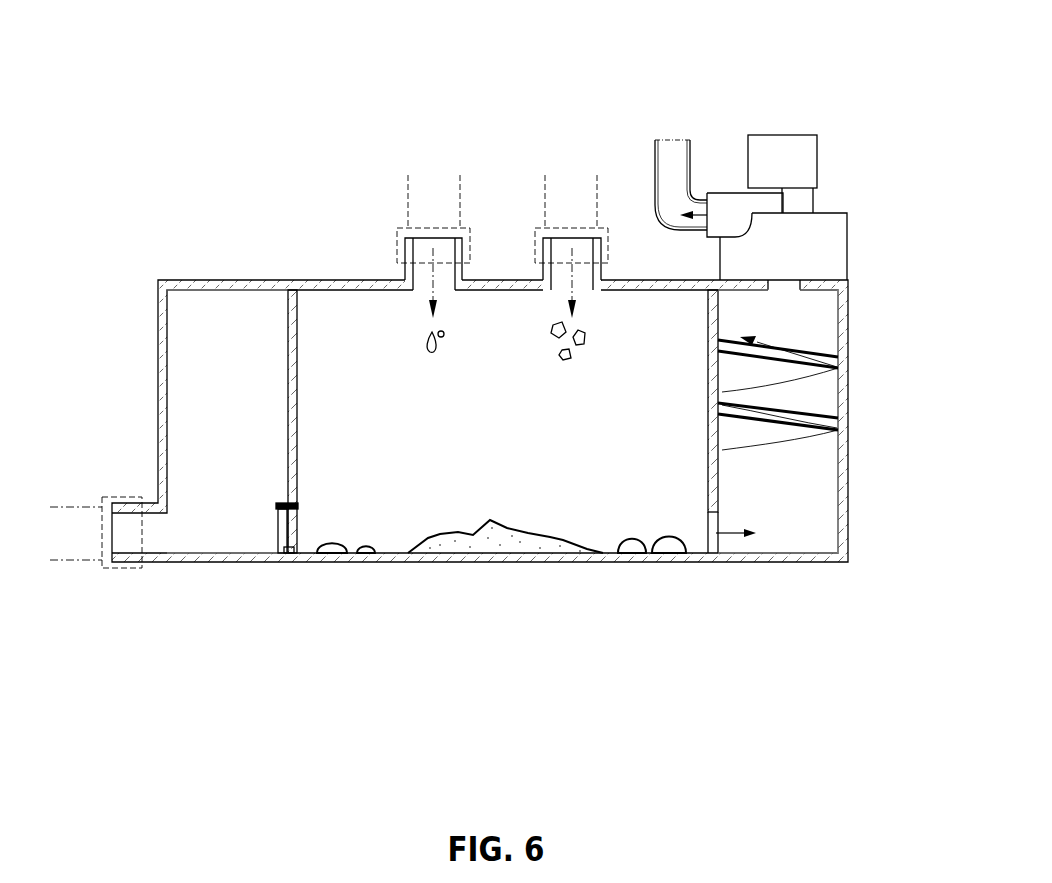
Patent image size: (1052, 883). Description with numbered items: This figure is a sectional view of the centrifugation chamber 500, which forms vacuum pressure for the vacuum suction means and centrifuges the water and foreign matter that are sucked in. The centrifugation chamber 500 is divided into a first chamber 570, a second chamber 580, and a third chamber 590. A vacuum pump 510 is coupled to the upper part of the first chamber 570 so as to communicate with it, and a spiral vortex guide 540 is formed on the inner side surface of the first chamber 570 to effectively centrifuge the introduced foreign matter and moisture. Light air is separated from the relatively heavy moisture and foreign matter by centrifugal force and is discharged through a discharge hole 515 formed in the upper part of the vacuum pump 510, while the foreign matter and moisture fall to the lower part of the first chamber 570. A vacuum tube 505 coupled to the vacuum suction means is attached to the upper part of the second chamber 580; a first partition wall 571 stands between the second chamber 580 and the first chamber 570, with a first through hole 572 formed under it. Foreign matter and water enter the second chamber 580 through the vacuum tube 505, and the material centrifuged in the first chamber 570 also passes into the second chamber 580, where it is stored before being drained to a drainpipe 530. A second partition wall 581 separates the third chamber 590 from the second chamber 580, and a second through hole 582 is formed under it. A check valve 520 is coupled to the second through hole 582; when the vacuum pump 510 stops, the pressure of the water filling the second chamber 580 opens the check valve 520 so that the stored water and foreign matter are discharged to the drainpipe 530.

The centrifugation chamber 500 is at (316, 213).
The vacuum tube 505 is at (543, 200).
The vacuum pump 510 is at (822, 242).
The discharge hole 515 is at (785, 293).
The check valve 520 is at (276, 523).
The drainpipe 530 is at (150, 545).
The spiral vortex guide 540 is at (815, 358).
The first chamber 570 is at (787, 535).
The first partition wall 571 is at (722, 486).
The first through hole 572 is at (660, 505).
The second chamber 580 is at (400, 498).
The second partition wall 581 is at (318, 472).
The second through hole 582 is at (287, 560).
The third chamber 590 is at (198, 413).